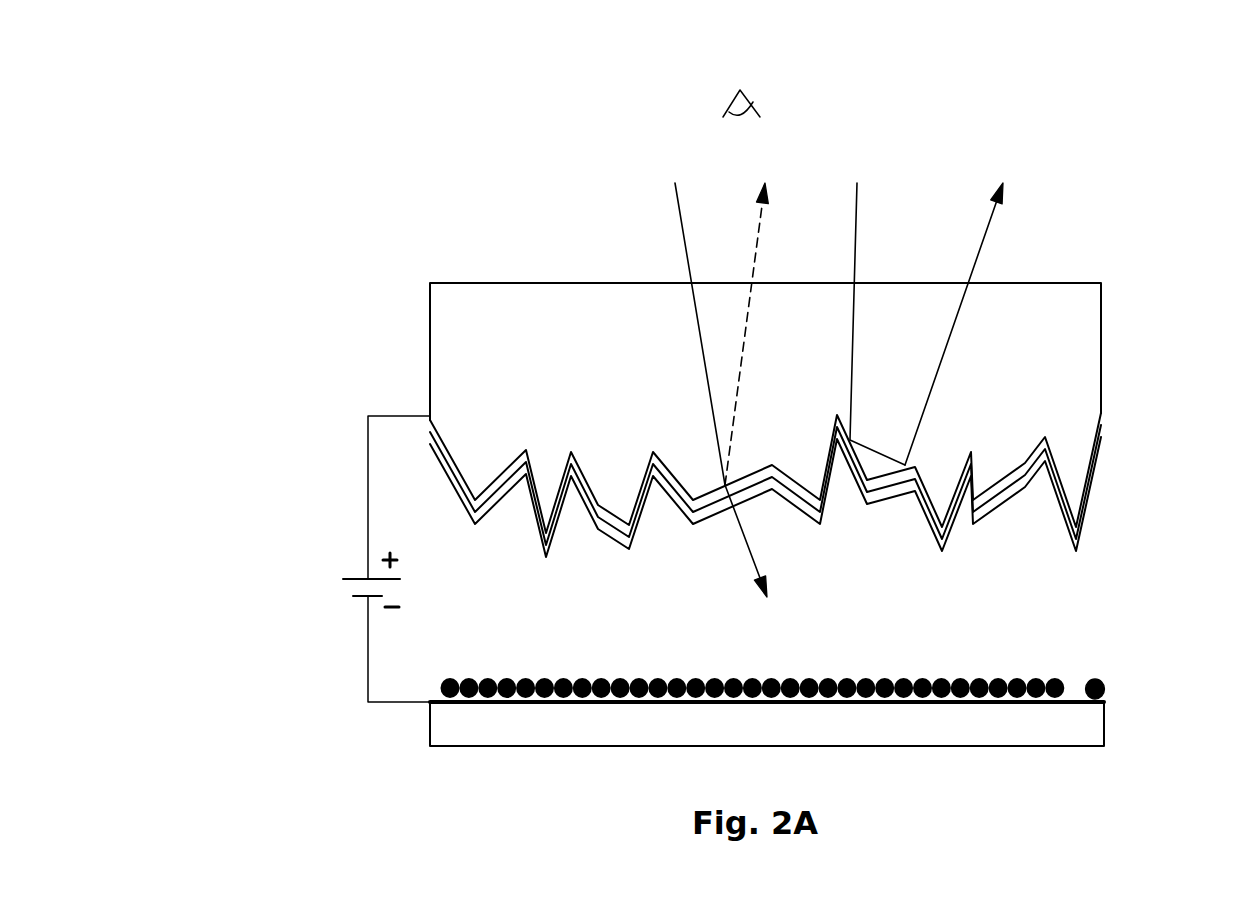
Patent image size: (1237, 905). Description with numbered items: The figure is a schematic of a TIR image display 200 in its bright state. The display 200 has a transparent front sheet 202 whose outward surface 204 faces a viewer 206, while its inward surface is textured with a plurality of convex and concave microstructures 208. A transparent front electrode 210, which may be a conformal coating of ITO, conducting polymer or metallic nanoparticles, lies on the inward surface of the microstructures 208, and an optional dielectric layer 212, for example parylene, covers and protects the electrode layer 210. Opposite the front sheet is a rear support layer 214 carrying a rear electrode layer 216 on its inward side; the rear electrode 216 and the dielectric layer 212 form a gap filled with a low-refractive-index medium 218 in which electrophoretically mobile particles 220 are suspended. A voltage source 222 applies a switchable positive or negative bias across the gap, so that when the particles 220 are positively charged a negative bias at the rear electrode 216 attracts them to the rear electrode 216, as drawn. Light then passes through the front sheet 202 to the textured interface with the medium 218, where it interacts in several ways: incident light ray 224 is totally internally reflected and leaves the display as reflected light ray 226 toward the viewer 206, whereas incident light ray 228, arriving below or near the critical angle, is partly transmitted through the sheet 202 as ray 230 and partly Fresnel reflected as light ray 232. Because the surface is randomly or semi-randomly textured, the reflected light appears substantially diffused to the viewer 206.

The display 200 is at (737, 436).
The transparent front sheet 202 is at (458, 347).
The outward surface 204 is at (495, 283).
The viewer 206 is at (750, 104).
The microstructures 208 is at (821, 483).
The transparent front electrode 210 is at (670, 470).
The dielectric layer 212 is at (993, 515).
The rear support layer 214 is at (623, 737).
The rear electrode layer 216 is at (1075, 700).
The medium 218 is at (838, 612).
The mobile particles 220 is at (665, 680).
The voltage source 222 is at (368, 515).
The incident light ray 224 is at (855, 205).
The reflected light ray 226 is at (985, 227).
The incident light ray 228 is at (687, 260).
The ray 230 is at (747, 553).
The light ray 232 is at (758, 228).